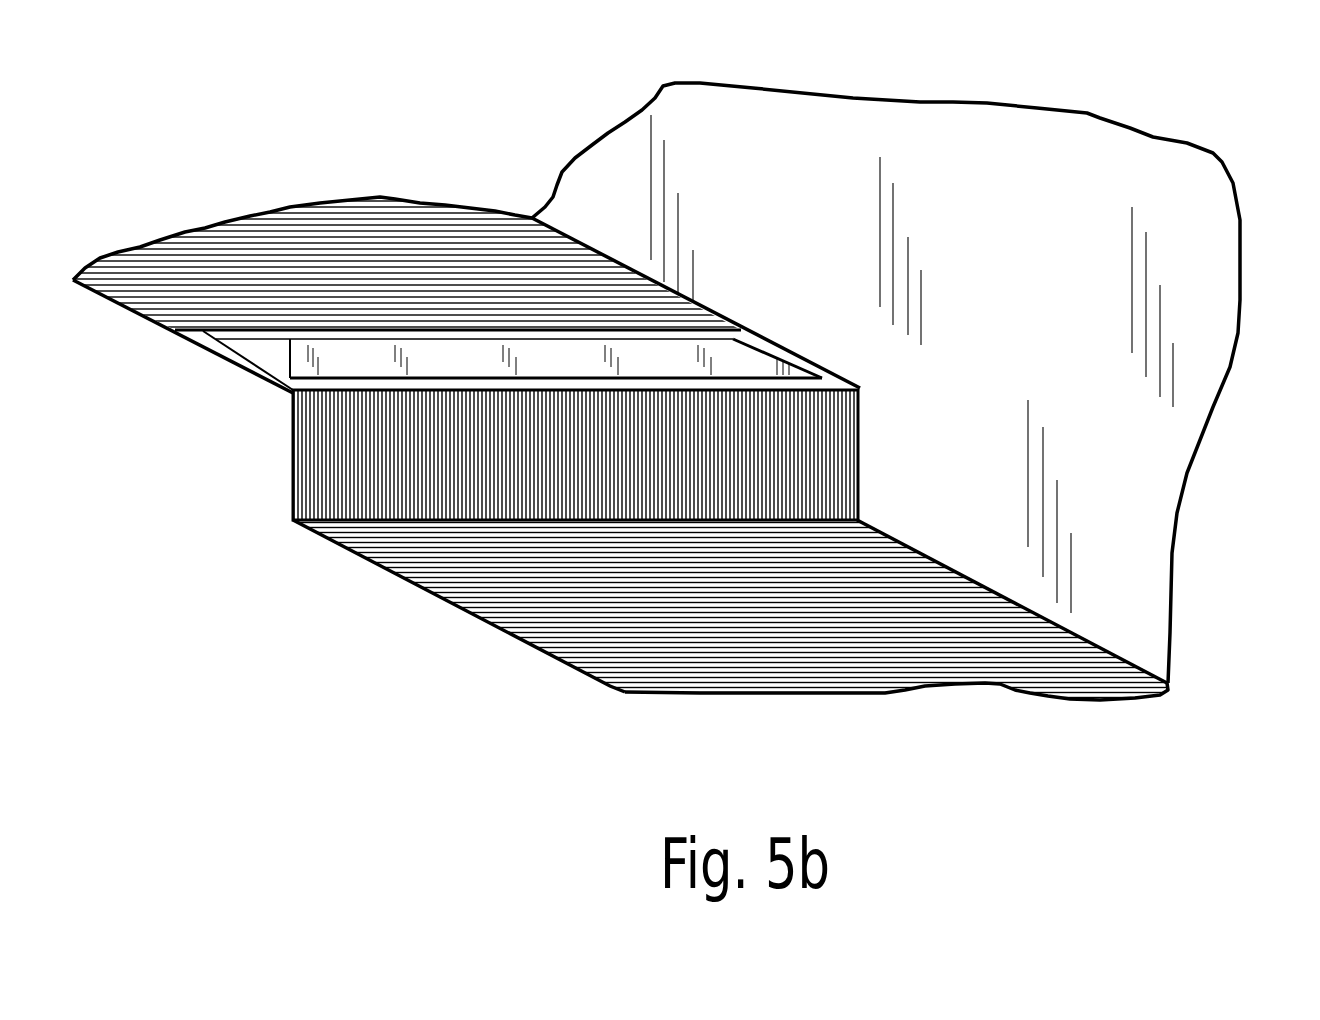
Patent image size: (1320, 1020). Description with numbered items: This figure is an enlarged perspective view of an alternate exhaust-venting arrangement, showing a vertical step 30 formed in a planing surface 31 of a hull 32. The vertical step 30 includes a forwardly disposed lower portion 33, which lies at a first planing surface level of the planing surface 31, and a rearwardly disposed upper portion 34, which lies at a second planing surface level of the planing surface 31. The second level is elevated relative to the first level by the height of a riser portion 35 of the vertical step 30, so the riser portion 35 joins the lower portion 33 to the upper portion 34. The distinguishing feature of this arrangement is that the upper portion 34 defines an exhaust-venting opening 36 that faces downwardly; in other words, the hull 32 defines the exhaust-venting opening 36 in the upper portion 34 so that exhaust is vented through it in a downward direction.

The vertical step 30 is at (696, 516).
The planing surface 31 is at (1084, 688).
The hull 32 is at (1193, 143).
The lower portion 33 is at (538, 612).
The upper portion 34 is at (158, 288).
The riser portion 35 is at (318, 465).
The exhaust-venting opening 36 is at (470, 372).